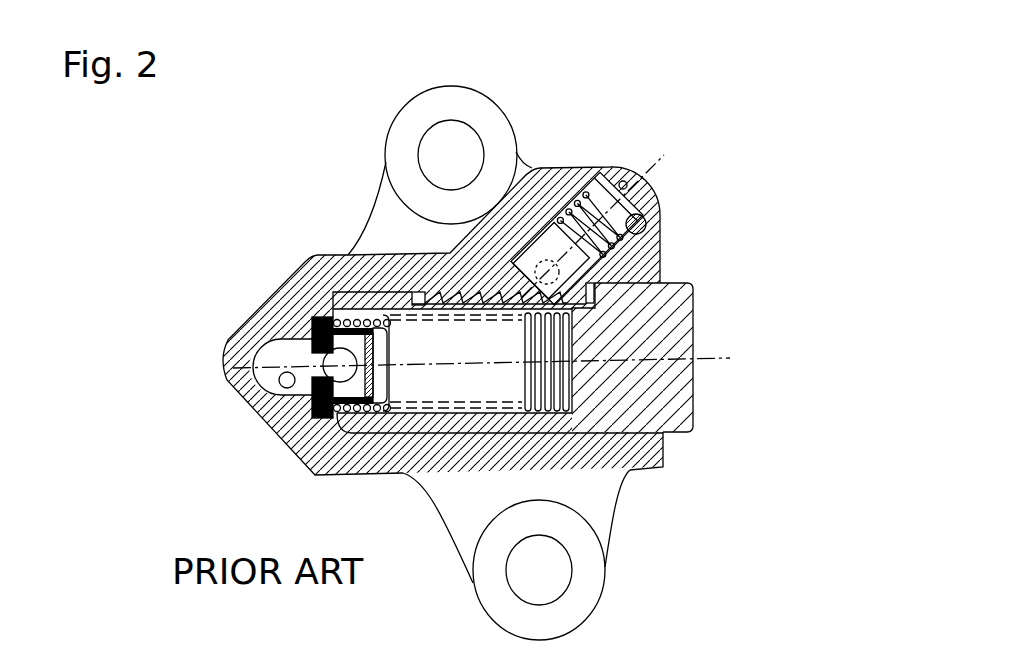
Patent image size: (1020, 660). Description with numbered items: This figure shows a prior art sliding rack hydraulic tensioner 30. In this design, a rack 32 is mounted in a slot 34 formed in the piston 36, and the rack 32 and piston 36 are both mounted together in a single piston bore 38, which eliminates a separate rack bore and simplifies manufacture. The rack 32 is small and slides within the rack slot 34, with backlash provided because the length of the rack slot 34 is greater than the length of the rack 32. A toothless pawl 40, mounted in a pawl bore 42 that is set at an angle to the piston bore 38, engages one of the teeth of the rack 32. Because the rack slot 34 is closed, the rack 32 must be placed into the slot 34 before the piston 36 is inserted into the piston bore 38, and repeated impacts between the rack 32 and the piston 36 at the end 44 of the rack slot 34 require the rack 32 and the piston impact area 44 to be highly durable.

The hydraulic tensioner 30 is at (750, 162).
The rack 32 is at (490, 300).
The rack slot 34 is at (430, 292).
The piston 36 is at (667, 385).
The piston bore 38 is at (593, 433).
The toothless pawl 40 is at (570, 272).
The pawl bore 42 is at (553, 217).
The end of the rack slot (piston impact area) 44 is at (597, 295).